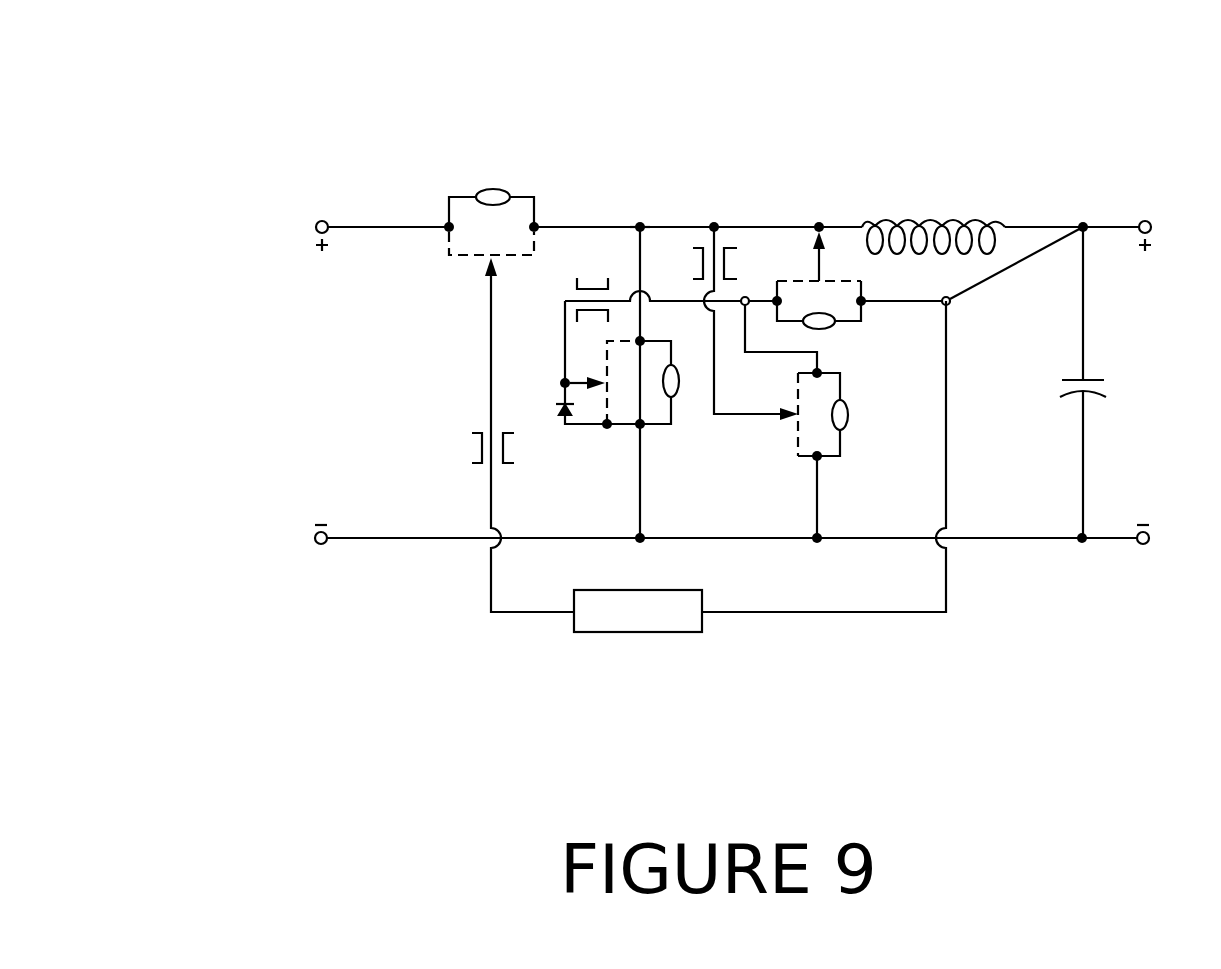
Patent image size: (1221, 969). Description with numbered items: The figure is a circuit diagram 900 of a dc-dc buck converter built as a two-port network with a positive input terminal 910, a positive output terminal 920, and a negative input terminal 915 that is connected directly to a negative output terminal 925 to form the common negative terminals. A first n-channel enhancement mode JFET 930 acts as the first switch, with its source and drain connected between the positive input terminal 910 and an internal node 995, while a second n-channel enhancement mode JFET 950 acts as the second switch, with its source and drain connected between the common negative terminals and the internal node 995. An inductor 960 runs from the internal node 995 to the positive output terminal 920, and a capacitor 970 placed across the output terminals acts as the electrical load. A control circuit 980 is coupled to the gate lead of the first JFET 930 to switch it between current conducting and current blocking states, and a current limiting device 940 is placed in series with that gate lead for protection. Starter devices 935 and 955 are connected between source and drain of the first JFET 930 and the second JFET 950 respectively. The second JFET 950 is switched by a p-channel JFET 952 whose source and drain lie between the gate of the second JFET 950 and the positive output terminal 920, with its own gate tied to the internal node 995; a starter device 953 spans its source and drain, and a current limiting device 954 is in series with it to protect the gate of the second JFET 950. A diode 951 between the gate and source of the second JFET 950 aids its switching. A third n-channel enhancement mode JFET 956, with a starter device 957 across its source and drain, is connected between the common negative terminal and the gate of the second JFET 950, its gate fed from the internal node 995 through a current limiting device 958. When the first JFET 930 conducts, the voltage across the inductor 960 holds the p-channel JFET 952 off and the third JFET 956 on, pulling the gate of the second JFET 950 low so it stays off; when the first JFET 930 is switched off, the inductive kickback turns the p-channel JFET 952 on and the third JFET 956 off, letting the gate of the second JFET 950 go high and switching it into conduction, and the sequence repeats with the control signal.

The circuit diagram 900 is at (216, 104).
The positive input terminal 910 is at (318, 221).
The negative input terminal 915 is at (318, 546).
The positive output terminal 920 is at (1151, 221).
The negative output terminal 925 is at (1147, 547).
The first n-channel enhancement mode JFET 930 is at (470, 258).
The starter device 935 is at (505, 193).
The current limiting device 940 is at (472, 462).
The second n-channel enhancement mode JFET 950 is at (615, 432).
The diode 951 is at (558, 414).
The p-channel JFET 952 is at (852, 281).
The starter device 953 is at (822, 329).
The current limiting device 954 is at (577, 283).
The starter device 955 is at (680, 392).
The third n-channel enhancement mode JFET 956 is at (794, 445).
The starter device 957 is at (848, 405).
The current limiting device 958 is at (733, 249).
The inductor 960 is at (918, 222).
The capacitor 970 is at (1108, 383).
The control circuit 980 is at (680, 633).
The internal node 995 is at (648, 222).